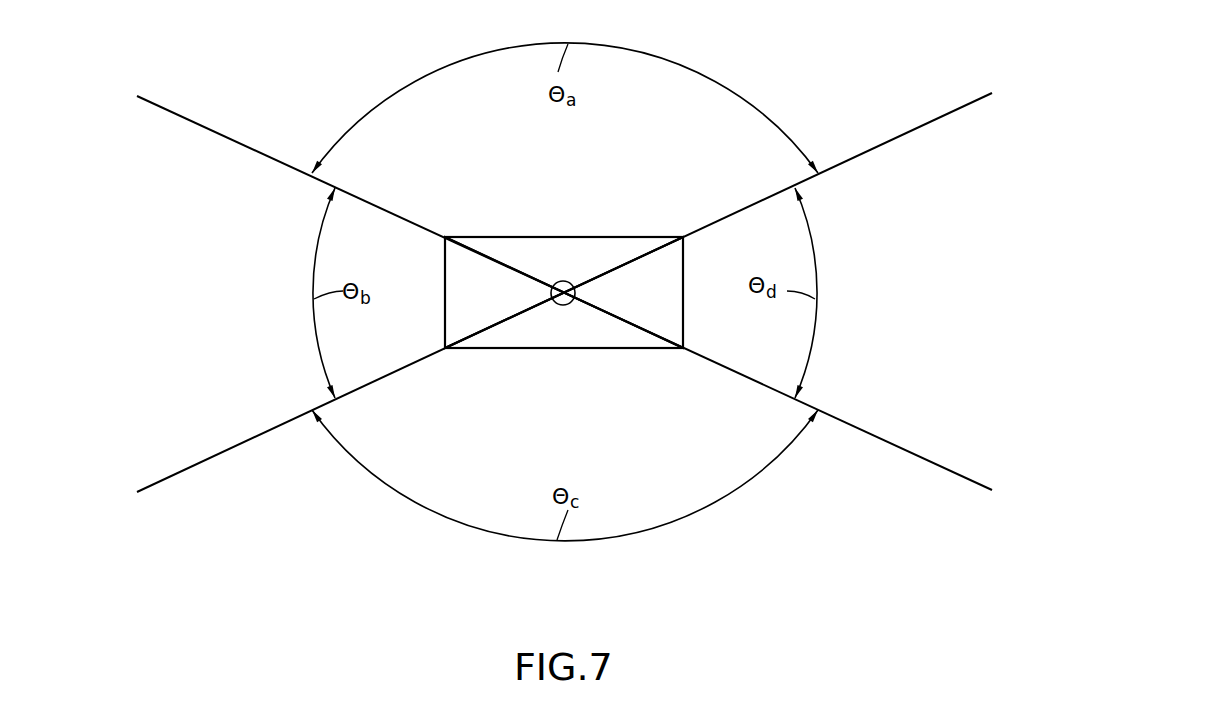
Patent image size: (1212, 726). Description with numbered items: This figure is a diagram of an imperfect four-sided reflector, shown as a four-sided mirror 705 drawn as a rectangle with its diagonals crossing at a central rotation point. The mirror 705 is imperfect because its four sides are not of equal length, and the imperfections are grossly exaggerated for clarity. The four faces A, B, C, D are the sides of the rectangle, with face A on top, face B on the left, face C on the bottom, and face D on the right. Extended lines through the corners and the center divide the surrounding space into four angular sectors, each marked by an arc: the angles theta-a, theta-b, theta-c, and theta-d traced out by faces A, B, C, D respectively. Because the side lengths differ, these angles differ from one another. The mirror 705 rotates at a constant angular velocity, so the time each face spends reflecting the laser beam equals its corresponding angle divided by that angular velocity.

The four-sided mirror 705 is at (588, 322).
The face A is at (564, 265).
The face B is at (504, 292).
The face C is at (564, 321).
The face D is at (623, 292).